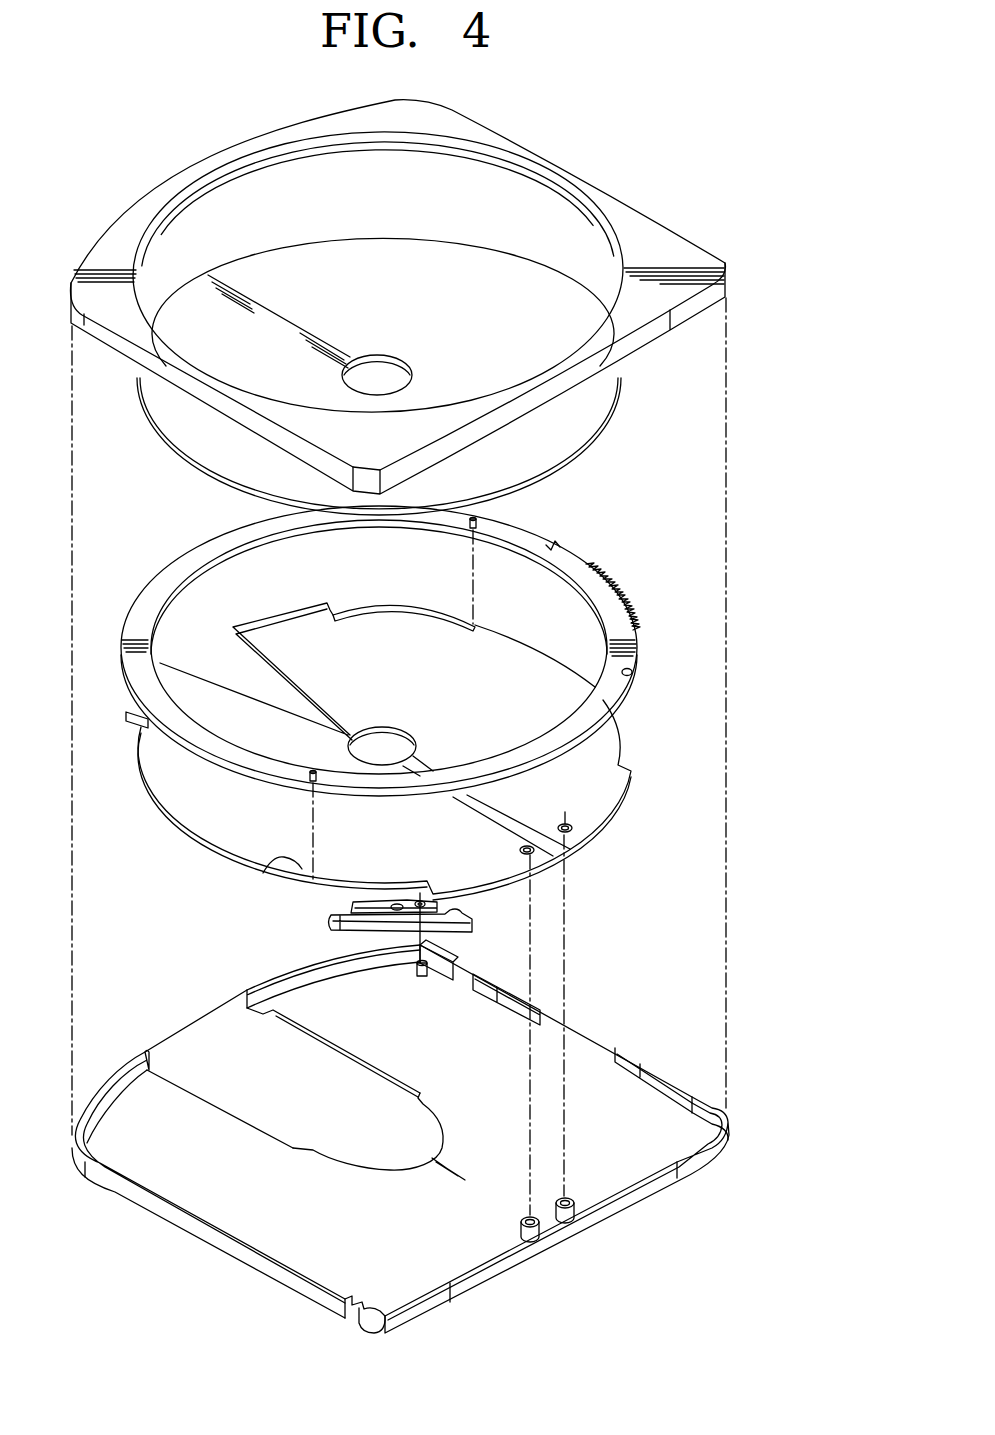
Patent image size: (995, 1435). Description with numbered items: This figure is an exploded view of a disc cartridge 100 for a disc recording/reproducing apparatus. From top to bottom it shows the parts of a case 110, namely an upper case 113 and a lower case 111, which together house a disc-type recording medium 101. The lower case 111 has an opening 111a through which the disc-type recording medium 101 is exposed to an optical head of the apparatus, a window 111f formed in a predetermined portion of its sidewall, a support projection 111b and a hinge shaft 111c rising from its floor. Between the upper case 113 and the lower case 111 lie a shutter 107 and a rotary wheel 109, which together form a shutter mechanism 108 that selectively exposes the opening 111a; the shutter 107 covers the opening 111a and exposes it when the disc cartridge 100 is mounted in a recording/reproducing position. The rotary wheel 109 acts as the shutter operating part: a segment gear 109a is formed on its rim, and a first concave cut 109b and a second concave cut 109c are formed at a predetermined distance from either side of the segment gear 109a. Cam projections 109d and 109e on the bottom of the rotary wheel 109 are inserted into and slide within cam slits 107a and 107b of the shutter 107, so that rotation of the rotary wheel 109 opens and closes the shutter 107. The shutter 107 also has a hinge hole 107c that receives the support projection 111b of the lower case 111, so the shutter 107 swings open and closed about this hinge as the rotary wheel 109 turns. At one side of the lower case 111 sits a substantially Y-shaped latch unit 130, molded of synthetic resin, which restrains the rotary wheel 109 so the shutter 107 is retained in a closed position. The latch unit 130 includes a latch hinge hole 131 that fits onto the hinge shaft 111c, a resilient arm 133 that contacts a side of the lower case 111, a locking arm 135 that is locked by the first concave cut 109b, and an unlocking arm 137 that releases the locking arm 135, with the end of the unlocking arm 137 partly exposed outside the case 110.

The disc cartridge 100 is at (626, 135).
The case 110 is at (411, 716).
The upper case 113 is at (667, 247).
The lower case 111 is at (647, 1100).
The disc-type recording medium 101 is at (593, 412).
The shutter mechanism 108 is at (622, 554).
The rotary wheel 109 is at (607, 697).
The segment gear 109a is at (624, 597).
The first concave cut 109b is at (632, 672).
The second concave cut 109c is at (585, 524).
The cam projection 109d is at (478, 522).
The cam projection 109e is at (311, 779).
The shutter 107 is at (598, 757).
The cam slit 107a is at (433, 612).
The cam slit 107b is at (265, 869).
The hinge hole 107c is at (580, 823).
The latch unit 130 is at (306, 918).
The latch hinge hole 131 is at (446, 902).
The resilient arm 133 is at (367, 903).
The locking arm 135 is at (355, 922).
The unlocking arm 137 is at (475, 921).
The opening 111a is at (186, 1088).
The support projection 111b is at (576, 1212).
The hinge shaft 111c is at (443, 962).
The window 111f is at (617, 1047).